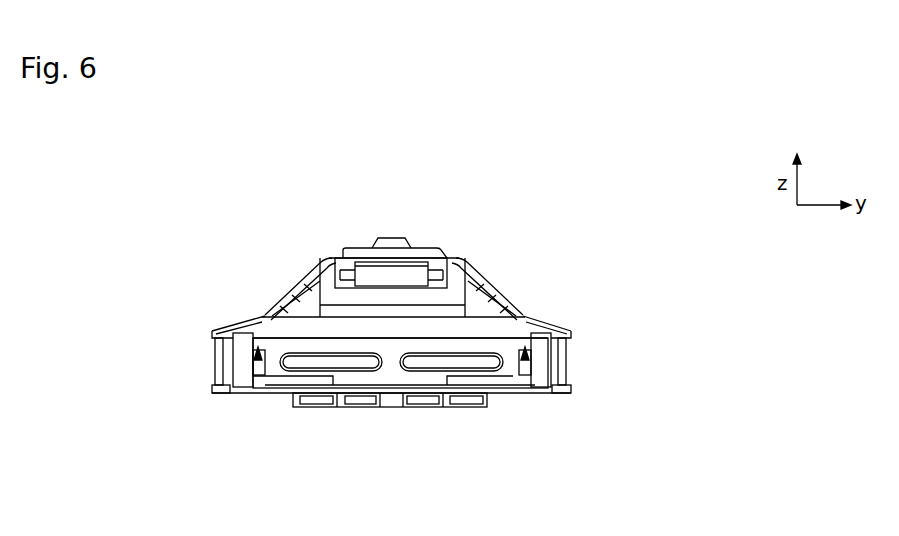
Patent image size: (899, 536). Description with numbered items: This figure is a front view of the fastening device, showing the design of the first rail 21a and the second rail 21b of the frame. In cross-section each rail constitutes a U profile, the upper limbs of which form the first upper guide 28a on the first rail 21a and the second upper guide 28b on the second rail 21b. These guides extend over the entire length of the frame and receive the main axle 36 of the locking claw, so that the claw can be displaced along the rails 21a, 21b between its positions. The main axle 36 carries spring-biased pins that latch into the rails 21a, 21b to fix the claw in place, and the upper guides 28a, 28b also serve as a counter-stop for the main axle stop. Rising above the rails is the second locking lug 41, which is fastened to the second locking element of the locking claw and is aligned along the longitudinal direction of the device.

The second locking lug 41 is at (340, 263).
The first upper guide 28a is at (240, 328).
The second upper guide 28b is at (549, 332).
The first rail 21a is at (240, 347).
The second rail 21b is at (549, 358).
The main axle 36 is at (380, 378).